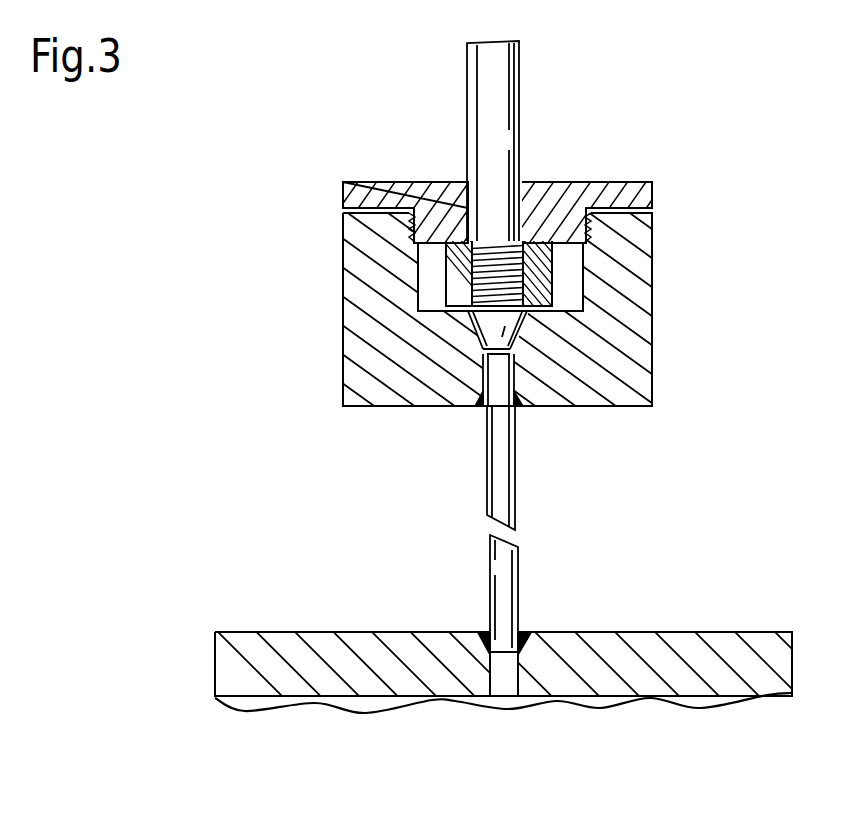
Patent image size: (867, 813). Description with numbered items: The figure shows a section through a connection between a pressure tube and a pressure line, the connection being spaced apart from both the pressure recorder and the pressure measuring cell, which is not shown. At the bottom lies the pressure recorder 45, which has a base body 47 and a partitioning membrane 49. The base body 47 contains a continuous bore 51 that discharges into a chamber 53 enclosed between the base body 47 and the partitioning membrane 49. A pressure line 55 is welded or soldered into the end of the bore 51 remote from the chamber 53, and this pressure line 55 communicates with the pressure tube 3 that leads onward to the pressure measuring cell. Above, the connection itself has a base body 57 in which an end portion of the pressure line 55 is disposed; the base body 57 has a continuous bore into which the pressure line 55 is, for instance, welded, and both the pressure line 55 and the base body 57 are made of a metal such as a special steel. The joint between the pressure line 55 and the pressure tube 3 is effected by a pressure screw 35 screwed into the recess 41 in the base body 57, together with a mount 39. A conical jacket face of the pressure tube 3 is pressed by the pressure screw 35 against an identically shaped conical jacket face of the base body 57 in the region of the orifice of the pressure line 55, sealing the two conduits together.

The pressure tube 3 is at (478, 89).
The pressure screw 35 is at (368, 188).
The mount 39 is at (455, 270).
The recess 41 is at (572, 292).
The base body 57 is at (355, 317).
The pressure line 55 is at (490, 466).
The pressure recorder 45 is at (466, 648).
The base body 47 is at (287, 637).
The partitioning membrane 49 is at (283, 712).
The bore 51 is at (518, 667).
The chamber 53 is at (503, 699).